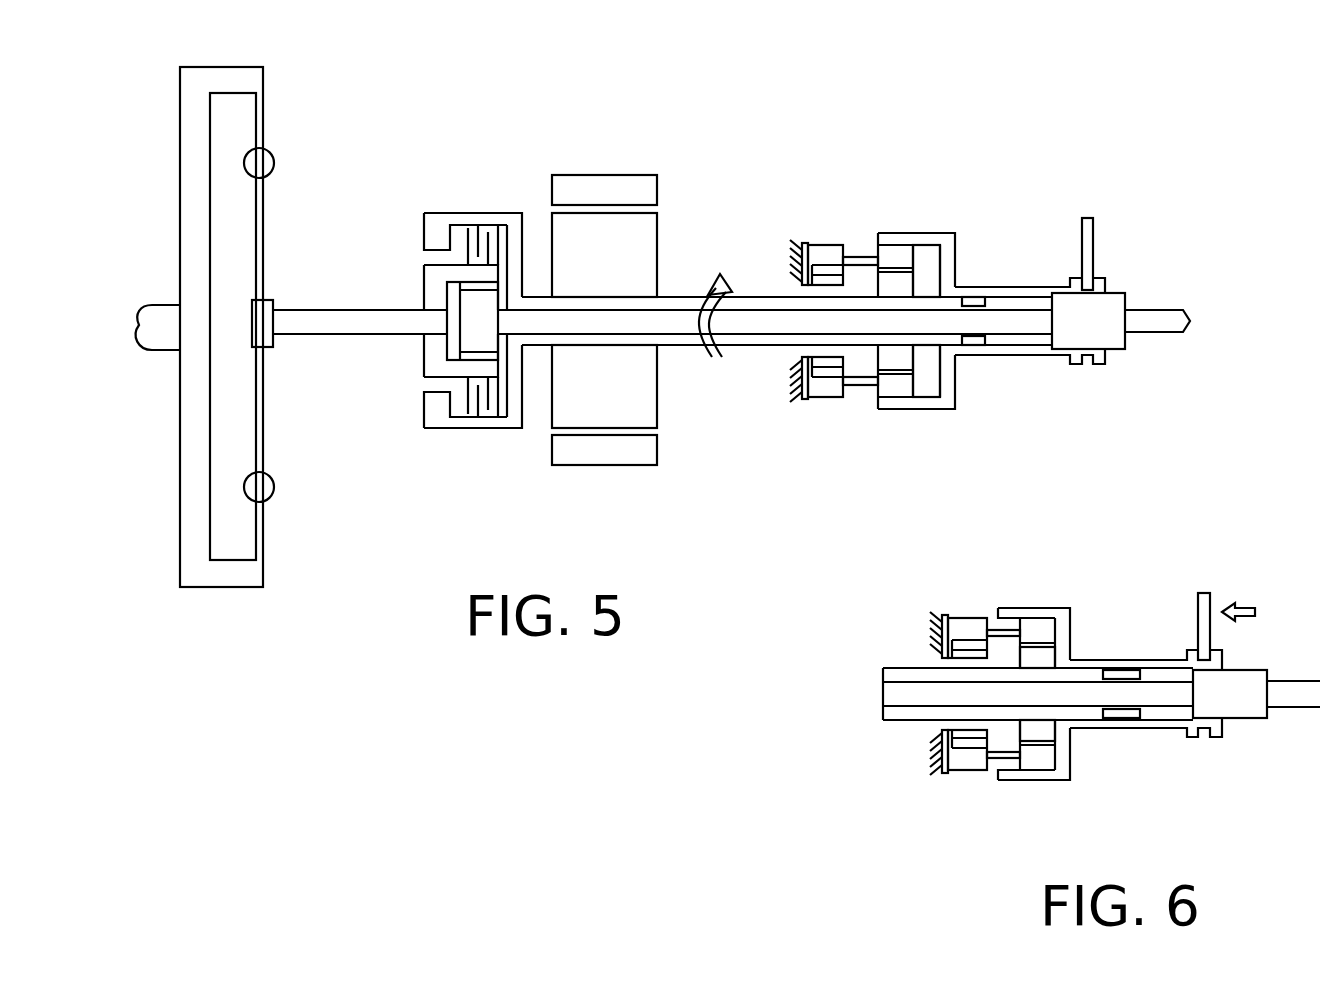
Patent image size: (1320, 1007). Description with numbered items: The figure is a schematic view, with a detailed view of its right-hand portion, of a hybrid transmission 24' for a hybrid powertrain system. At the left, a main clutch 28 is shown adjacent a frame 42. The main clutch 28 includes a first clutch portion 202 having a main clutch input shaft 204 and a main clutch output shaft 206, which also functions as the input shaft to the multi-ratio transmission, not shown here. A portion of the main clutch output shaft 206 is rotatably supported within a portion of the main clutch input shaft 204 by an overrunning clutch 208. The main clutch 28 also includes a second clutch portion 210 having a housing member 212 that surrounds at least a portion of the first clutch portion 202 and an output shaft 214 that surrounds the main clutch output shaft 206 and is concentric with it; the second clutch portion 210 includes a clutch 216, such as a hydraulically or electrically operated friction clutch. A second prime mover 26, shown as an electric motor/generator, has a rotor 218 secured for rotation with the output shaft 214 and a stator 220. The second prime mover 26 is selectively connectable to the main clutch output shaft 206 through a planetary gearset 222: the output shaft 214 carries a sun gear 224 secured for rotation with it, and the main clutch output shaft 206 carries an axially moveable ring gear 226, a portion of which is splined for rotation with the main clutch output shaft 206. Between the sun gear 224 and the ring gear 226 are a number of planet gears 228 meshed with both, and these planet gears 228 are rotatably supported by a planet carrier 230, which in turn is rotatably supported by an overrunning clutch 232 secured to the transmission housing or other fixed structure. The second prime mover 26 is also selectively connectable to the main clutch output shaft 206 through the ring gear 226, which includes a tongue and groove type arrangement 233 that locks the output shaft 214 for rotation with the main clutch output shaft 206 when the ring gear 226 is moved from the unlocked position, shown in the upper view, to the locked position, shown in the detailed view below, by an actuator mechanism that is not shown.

In FIG. 5, the base frame 42 is at (215, 588).
In FIG. 5, the main clutch input shaft 204 is at (300, 345).
In FIG. 5, the main clutch 28 is at (438, 321).
In FIG. 5, the first clutch portion 202 is at (420, 362).
In FIG. 5, the second clutch portion 210 is at (424, 240).
In FIG. 5, the housing member 212 is at (478, 212).
In FIG. 5, the clutch 216 is at (470, 246).
In FIG. 5, the overrunning clutch 208 is at (487, 362).
In FIG. 5, the main clutch output shaft 206 is at (765, 325).
In FIG. 6, the main clutch output shaft 206 is at (915, 700).
In FIG. 5, the second prime mover 26 is at (654, 318).
In FIG. 5, the stator 220 is at (657, 190).
In FIG. 5, the rotor 218 is at (660, 405).
In FIG. 5, the output shaft 214 is at (690, 297).
In FIG. 6, the output shaft 214 is at (918, 668).
In FIG. 5, the hybrid transmission 24' is at (966, 276).
In FIG. 5, the overrunning clutch 232 is at (822, 398).
In FIG. 6, the overrunning clutch 232 is at (965, 765).
In FIG. 5, the planet carrier 230 is at (860, 256).
In FIG. 6, the planet carrier 230 is at (1002, 625).
In FIG. 5, the planetary gearset 222 is at (907, 321).
In FIG. 6, the planetary gearset 222 is at (1055, 695).
In FIG. 5, the sun gear 224 is at (888, 362).
In FIG. 6, the sun gear 224 is at (1035, 738).
In FIG. 5, the planet gears 228 is at (903, 385).
In FIG. 6, the planet gears 228 is at (1055, 752).
In FIG. 5, the ring gear 226 is at (955, 272).
In FIG. 6, the ring gear 226 is at (1070, 633).
In FIG. 5, the tongue and groove type arrangement 233 is at (1016, 360).
In FIG. 6, the tongue and groove type arrangement 233 is at (1163, 742).